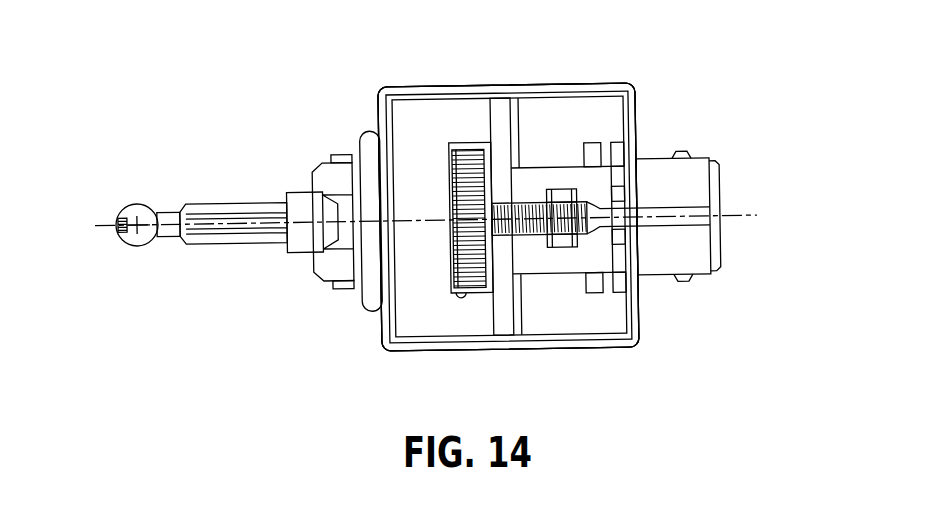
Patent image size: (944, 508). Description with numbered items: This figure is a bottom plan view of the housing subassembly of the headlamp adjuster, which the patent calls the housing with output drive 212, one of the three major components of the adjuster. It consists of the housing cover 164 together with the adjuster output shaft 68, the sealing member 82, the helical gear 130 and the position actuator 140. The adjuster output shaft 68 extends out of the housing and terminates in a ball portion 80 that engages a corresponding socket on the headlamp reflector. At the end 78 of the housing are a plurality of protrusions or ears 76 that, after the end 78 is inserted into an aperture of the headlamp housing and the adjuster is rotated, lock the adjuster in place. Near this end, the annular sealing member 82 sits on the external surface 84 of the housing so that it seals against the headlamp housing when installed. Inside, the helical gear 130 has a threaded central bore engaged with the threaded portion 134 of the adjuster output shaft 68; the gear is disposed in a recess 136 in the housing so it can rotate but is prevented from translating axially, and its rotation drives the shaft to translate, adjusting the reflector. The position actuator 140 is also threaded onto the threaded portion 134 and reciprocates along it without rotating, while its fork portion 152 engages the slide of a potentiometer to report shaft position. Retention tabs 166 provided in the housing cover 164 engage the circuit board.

The adjuster output shaft 68 is at (236, 207).
The ball portion 80 is at (120, 252).
The end of the housing 78 is at (317, 263).
The protrusions or ears 76 is at (333, 160).
The external surface of the housing 84 is at (360, 138).
The sealing member 82 is at (370, 148).
The helical gear 130 is at (467, 168).
The threaded portion 134 is at (522, 145).
The recess 136 is at (460, 300).
The position actuator 140 is at (567, 249).
The fork portion 152 is at (567, 190).
The cover portion of the housing 164 is at (598, 84).
The retention tabs 166 is at (619, 257).
The housing with output drive 212 is at (638, 383).